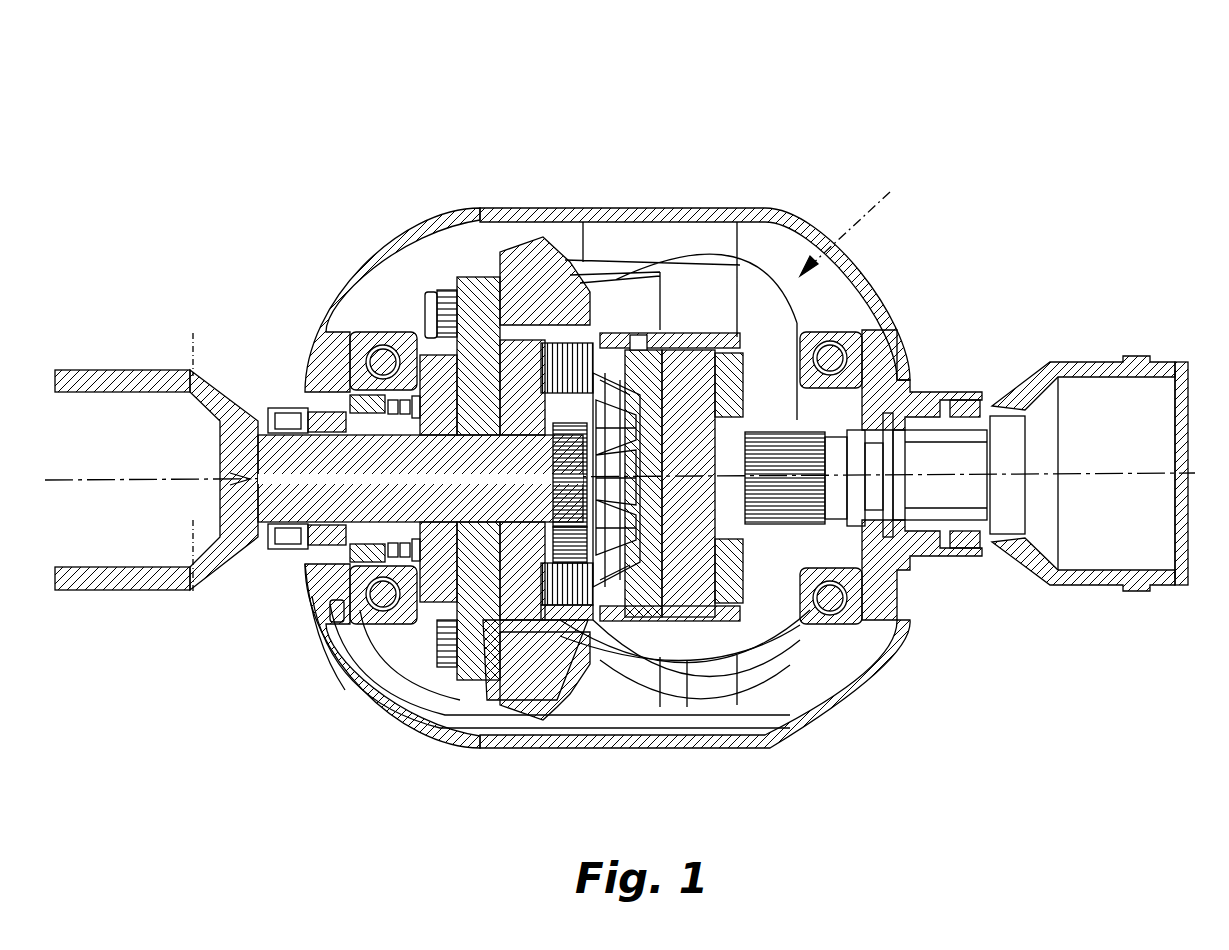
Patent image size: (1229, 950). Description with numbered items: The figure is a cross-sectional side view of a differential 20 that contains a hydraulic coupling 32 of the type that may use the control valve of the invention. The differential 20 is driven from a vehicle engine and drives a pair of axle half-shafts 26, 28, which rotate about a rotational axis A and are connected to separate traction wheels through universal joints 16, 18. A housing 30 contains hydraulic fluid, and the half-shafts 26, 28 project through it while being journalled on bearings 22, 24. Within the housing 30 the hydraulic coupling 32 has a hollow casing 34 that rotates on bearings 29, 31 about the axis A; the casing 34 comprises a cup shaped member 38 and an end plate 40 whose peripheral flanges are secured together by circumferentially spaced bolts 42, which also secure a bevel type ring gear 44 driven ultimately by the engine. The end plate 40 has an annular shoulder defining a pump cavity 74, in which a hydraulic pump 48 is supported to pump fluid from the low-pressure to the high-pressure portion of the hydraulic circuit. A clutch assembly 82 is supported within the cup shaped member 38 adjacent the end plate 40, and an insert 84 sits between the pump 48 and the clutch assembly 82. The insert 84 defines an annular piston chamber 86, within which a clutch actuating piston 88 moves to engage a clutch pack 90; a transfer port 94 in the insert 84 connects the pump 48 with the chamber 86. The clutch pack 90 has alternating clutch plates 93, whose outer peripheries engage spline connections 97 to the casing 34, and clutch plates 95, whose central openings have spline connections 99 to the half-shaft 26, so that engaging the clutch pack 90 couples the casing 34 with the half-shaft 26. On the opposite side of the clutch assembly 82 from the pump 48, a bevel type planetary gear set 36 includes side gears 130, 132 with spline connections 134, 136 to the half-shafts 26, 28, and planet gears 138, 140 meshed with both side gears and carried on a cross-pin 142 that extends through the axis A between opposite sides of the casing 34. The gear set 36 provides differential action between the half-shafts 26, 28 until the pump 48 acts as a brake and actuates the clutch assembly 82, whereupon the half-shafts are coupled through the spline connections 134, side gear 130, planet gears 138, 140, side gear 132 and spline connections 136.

The differential 20 is at (746, 108).
The universal joint 16 is at (135, 372).
The universal joint 18 is at (1100, 361).
The bearing 22 is at (283, 540).
The bearing 24 is at (968, 535).
The axle half-shaft 26 is at (199, 449).
The axle half-shaft 28 is at (926, 500).
The bearing 29 is at (335, 620).
The housing 30 is at (775, 208).
The bearing 31 is at (908, 358).
The hydraulic coupling 32 is at (848, 220).
The casing 34 is at (710, 328).
The planetary gear set 36 is at (786, 424).
The cup shaped member 38 is at (790, 610).
The end plate 40 is at (425, 305).
The bolts 42 is at (470, 330).
The ring gear 44 is at (555, 335).
The hydraulic pump 48 is at (470, 460).
The pump cavity 74 is at (520, 405).
The clutch assembly 82 is at (425, 300).
The insert 84 is at (445, 270).
The piston chamber 86 is at (395, 652).
The clutch actuating piston 88 is at (425, 335).
The clutch pack 90 is at (520, 340).
The clutch plates 93 is at (578, 560).
The transfer port 94 is at (420, 655).
The clutch plates 95 is at (525, 585).
The spline connections 97 is at (538, 652).
The spline connections 99 is at (558, 480).
The side gear 130 is at (622, 335).
The side gear 132 is at (800, 614).
The spline connections 134 is at (706, 478).
The spline connections 136 is at (886, 600).
The planet gear 138 is at (762, 415).
The planet gear 140 is at (720, 620).
The cross-pin 142 is at (690, 620).
The rotational axis A is at (86, 479).